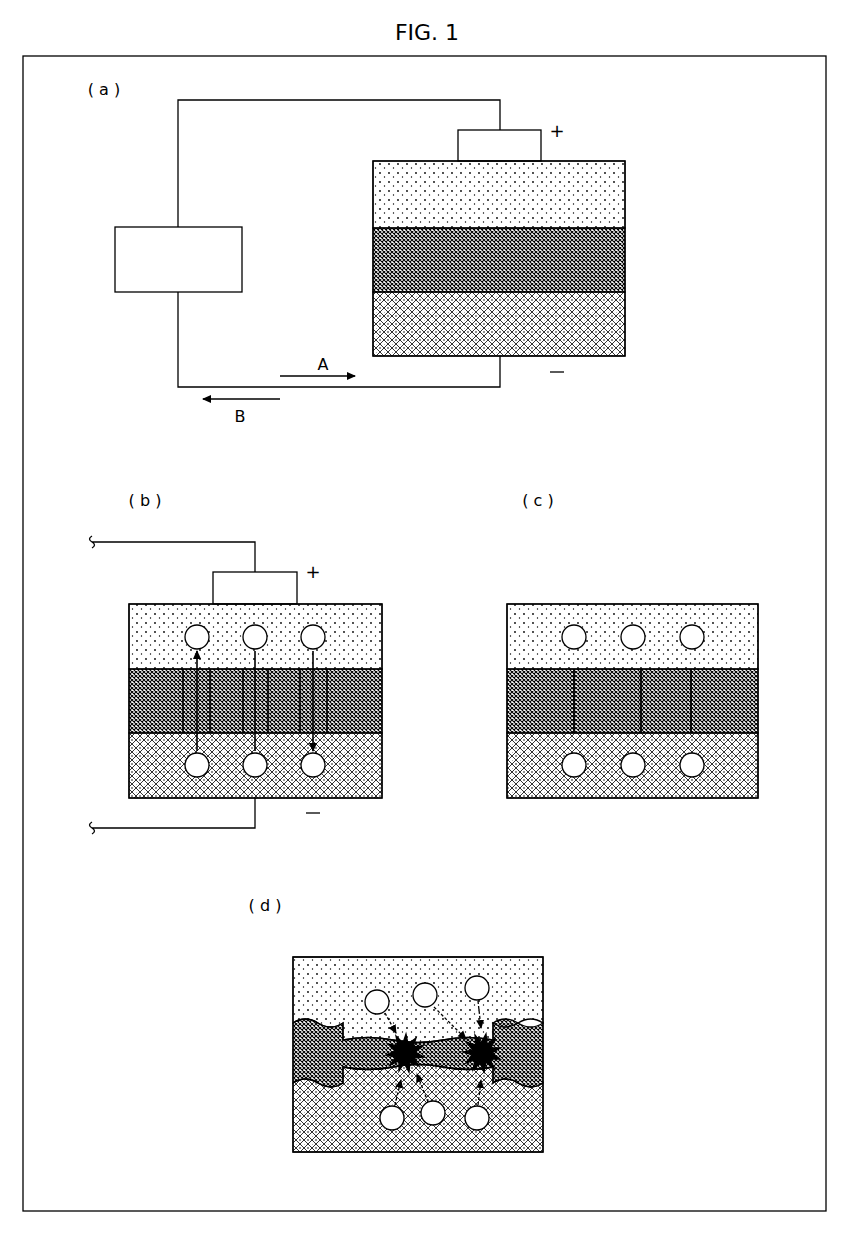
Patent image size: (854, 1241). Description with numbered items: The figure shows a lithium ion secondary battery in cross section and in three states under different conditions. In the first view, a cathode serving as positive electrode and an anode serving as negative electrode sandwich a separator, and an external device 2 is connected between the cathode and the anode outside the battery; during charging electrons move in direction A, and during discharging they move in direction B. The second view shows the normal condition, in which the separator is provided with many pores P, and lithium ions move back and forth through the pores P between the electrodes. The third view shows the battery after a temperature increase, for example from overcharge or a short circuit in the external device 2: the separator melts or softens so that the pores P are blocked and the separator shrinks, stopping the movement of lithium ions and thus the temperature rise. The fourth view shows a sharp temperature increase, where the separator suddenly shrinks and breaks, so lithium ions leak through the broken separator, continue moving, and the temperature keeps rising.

The external device 2 is at (242, 258).
The pores P is at (329, 700).